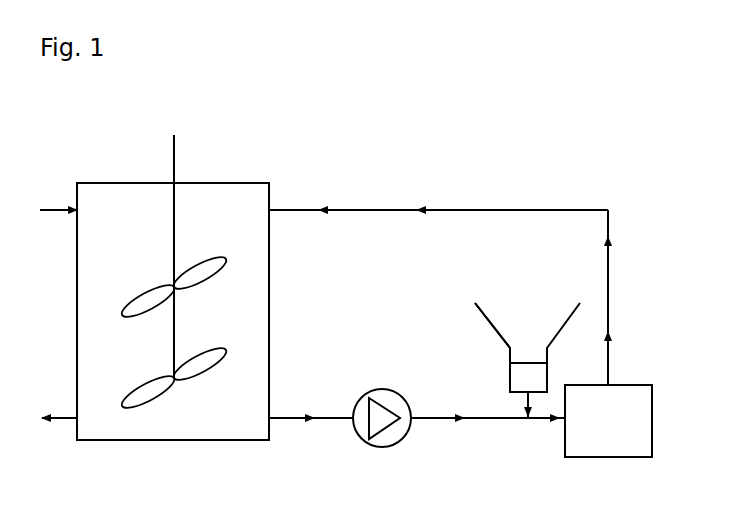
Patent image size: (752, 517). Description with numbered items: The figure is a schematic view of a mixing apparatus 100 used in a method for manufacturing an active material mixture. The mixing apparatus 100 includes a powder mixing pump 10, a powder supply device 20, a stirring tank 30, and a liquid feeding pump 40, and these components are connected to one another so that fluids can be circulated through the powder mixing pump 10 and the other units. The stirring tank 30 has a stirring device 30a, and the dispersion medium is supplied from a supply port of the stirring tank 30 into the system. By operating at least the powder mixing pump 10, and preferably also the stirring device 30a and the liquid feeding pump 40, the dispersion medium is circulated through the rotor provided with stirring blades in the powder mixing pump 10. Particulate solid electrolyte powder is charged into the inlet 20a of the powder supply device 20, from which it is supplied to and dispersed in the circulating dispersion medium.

The mixing apparatus 100 is at (414, 97).
The powder mixing pump 10 is at (661, 444).
The powder supply device 20 is at (498, 351).
The inlet 20a is at (474, 305).
The stirring tank 30 is at (222, 169).
The stirring device 30a is at (226, 261).
The liquid feeding pump 40 is at (412, 443).